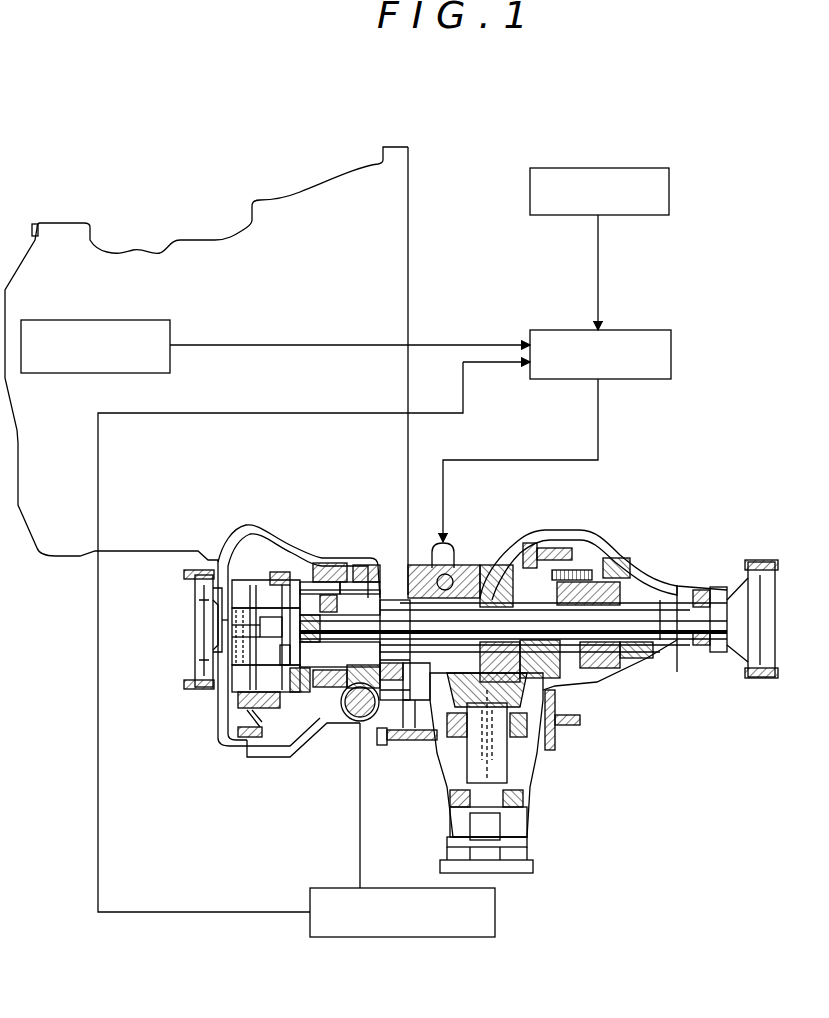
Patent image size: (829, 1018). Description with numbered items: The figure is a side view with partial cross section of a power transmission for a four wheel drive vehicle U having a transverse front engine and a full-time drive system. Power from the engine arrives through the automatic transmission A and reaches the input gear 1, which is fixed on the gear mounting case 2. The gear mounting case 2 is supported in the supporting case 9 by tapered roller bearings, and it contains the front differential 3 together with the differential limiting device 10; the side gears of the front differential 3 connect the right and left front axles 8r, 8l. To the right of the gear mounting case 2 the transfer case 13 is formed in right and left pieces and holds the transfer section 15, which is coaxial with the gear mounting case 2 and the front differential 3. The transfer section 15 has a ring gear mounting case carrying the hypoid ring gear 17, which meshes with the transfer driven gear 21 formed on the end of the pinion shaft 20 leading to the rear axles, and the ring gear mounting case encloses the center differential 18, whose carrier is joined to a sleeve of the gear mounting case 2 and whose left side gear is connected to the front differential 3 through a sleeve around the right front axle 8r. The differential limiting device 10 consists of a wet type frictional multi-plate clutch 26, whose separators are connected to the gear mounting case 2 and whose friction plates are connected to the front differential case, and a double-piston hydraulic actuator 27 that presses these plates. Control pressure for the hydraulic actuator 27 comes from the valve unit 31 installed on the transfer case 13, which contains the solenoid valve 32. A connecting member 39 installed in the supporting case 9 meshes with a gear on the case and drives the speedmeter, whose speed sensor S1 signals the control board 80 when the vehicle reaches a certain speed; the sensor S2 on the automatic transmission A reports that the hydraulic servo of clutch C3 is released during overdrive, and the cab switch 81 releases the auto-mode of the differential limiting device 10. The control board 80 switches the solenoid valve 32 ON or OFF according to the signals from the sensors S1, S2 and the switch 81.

The input gear 1 is at (243, 742).
The gear mounting case 2 is at (282, 546).
The front differential 3 is at (265, 590).
The supporting case 9 is at (283, 758).
The differential limiting device 10 is at (318, 556).
The transfer case 13 is at (522, 540).
The transfer section 15 is at (556, 528).
The ring gear 17 is at (538, 546).
The center differential 18 is at (580, 562).
The pinion shaft 20 is at (522, 800).
The transfer driven gear 21 is at (430, 735).
The wet type frictional multi-plate clutch 26 is at (335, 690).
The hydraulic actuator 27 is at (362, 557).
The valve unit 31 is at (458, 562).
The solenoid valve 32 is at (430, 565).
The connecting member 39 is at (366, 715).
The control board 80 is at (635, 330).
The switch 81 is at (648, 162).
The left front axle 8l is at (196, 612).
The right front axle 8r is at (677, 655).
The automatic transmission A is at (168, 236).
The speed sensor S1 is at (322, 938).
The sensor S2 is at (107, 321).
The four wheel drive vehicle U is at (640, 482).